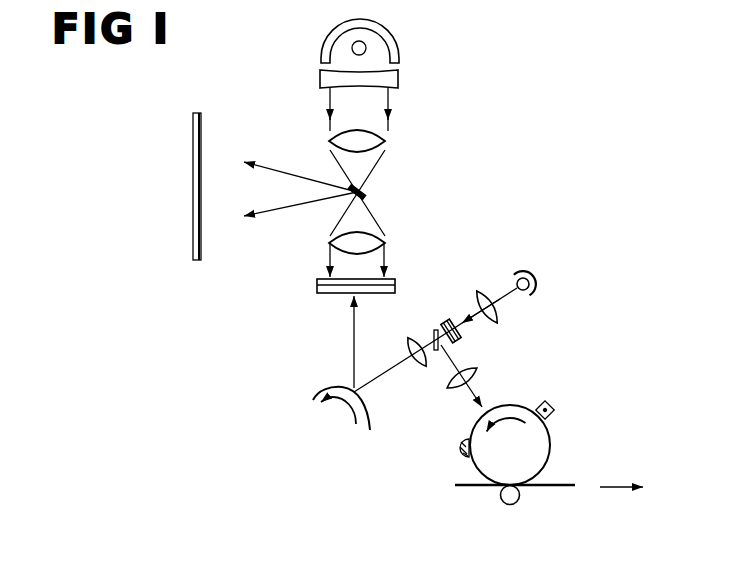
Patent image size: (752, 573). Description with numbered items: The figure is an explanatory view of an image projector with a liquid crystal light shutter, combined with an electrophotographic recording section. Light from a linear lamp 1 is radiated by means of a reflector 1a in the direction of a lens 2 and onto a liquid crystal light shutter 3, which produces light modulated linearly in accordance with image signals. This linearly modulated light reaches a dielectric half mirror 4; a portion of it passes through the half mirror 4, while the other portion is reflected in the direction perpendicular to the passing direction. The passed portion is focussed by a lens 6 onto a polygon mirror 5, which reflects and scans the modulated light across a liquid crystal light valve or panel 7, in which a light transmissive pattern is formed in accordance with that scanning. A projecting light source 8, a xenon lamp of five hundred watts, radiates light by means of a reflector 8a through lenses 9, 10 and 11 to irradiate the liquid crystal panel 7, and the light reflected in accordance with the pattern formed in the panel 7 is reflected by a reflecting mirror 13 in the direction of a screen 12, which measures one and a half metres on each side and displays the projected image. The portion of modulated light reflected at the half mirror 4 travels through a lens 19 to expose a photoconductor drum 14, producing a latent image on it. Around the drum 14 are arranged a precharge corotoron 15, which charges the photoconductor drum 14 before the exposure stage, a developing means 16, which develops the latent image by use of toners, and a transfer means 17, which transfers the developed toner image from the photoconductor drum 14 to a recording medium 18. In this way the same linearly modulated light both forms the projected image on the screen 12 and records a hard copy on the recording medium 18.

The linear lamp 1 is at (537, 290).
The reflector 1a is at (531, 270).
The lens 2 is at (496, 312).
The liquid crystal light shutter 3 is at (462, 340).
The dielectric half mirror 4 is at (436, 330).
The polygon mirror 5 is at (316, 404).
The lens 6 is at (418, 365).
The liquid crystal light valve or panel 7 is at (318, 293).
The projecting light source 8 is at (366, 49).
The reflector 8a is at (398, 43).
The lens 9 is at (398, 78).
The lens 10 is at (384, 150).
The lens 11 is at (386, 240).
The screen 12 is at (192, 256).
The reflecting mirror 13 is at (366, 196).
The photoconductor drum 14 is at (550, 440).
The precharge corotoron 15 is at (556, 406).
The developing means 16 is at (457, 447).
The transfer means 17 is at (498, 488).
The recording medium 18 is at (546, 487).
The lens 19 is at (455, 392).